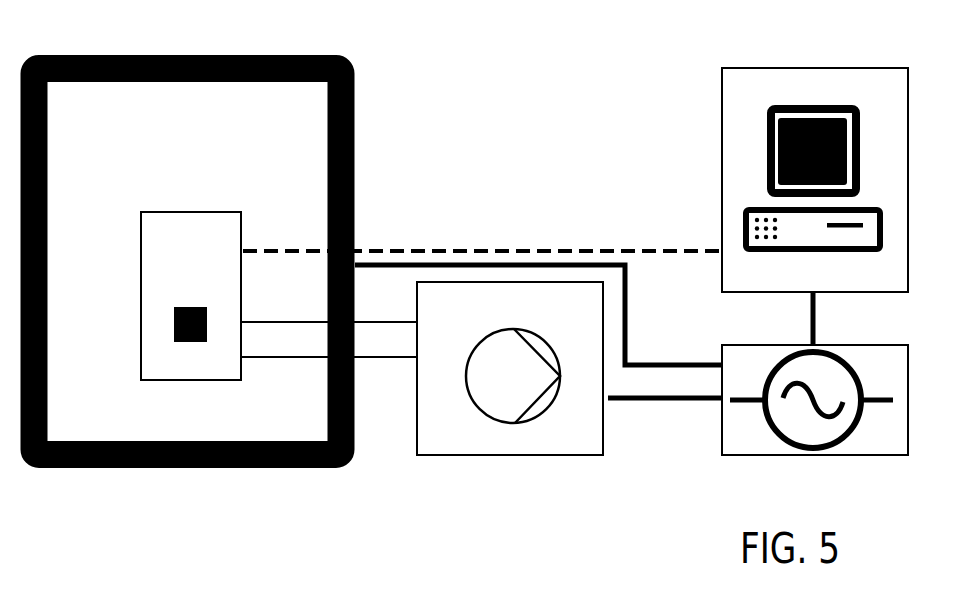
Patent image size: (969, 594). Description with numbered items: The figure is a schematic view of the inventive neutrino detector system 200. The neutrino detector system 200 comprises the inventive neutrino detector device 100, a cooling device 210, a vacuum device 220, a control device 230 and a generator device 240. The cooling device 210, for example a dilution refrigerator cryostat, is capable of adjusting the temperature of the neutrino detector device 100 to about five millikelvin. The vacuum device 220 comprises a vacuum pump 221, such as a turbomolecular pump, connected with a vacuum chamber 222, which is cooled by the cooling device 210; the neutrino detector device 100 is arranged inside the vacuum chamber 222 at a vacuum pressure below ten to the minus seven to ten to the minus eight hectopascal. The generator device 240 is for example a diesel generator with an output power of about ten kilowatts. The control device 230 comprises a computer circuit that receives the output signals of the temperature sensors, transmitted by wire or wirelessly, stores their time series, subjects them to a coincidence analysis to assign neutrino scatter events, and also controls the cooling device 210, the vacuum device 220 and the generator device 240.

The neutrino detector device 100 is at (162, 339).
The neutrino detector system 200 is at (163, 498).
The cooling device 210 is at (153, 57).
The vacuum device 220 is at (388, 332).
The vacuum pump 221 is at (493, 437).
The vacuum chamber 222 is at (200, 209).
The control device 230 is at (723, 146).
The generator device 240 is at (738, 437).